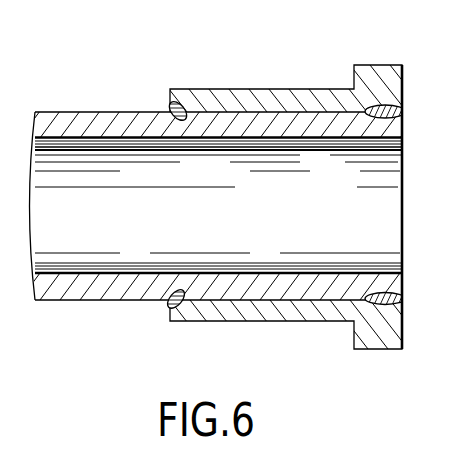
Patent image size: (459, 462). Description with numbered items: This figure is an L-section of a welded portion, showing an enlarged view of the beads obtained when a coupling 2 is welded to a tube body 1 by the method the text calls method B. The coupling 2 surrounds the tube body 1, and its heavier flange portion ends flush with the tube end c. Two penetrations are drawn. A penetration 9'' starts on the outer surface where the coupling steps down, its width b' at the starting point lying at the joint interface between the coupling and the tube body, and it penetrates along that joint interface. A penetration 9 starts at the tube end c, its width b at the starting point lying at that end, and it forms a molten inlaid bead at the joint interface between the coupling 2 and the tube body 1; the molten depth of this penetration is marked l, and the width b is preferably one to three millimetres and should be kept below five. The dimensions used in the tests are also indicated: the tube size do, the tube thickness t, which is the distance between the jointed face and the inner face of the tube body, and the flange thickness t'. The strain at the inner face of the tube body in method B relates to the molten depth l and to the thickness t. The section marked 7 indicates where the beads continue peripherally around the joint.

The tube body 1 is at (330, 127).
The coupling 2 is at (323, 97).
The penetration 9 is at (398, 141).
The penetration 9'' is at (193, 88).
The tube end c is at (402, 287).
The section line of FIG. 7 is at (393, 57).
The width at the starting point of penetration 9 b is at (427, 113).
The width at the starting point of penetration 9'' b' is at (151, 87).
The thickness of tube t is at (255, 124).
The thickness of flange t' is at (254, 100).
The tube diameter do is at (263, 143).
The molten depth of penetration l is at (402, 95).